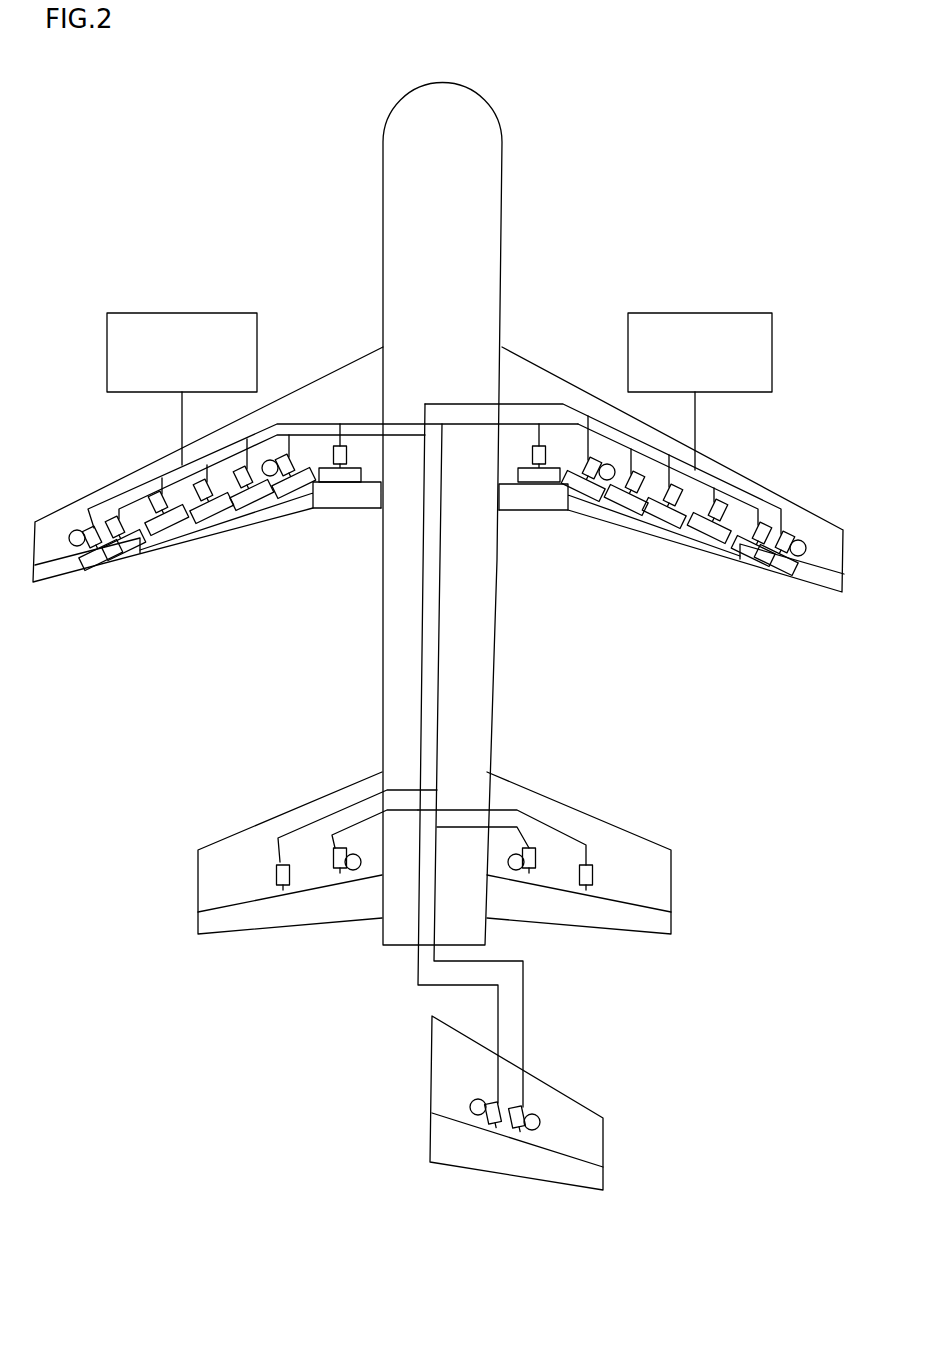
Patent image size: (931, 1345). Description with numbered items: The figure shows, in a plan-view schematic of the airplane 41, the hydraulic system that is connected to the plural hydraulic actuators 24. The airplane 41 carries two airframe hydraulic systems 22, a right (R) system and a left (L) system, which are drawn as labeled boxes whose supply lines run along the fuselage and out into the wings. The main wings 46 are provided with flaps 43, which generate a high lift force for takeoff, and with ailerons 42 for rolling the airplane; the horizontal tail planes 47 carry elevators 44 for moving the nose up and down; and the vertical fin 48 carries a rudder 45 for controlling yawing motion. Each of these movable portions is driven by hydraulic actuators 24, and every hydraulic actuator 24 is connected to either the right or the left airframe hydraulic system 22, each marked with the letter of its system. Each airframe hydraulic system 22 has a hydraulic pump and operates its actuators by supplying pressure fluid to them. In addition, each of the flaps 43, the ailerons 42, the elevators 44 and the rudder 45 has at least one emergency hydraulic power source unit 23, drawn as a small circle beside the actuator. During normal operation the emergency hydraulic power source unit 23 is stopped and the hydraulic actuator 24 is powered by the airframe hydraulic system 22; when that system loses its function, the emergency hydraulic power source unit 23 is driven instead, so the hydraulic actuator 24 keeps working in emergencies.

The airframe hydraulic system 22 is at (434, 696).
The emergency hydraulic power source unit 23 is at (270, 460).
The hydraulic actuator 24 is at (90, 550).
The airplane 41 is at (701, 89).
The aileron 42 is at (80, 565).
The flap 43 is at (278, 520).
The elevator 44 is at (280, 925).
The rudder 45 is at (527, 1165).
The main wing 46 is at (355, 385).
The horizontal tail plane 47 is at (250, 848).
The vertical fin 48 is at (580, 1136).